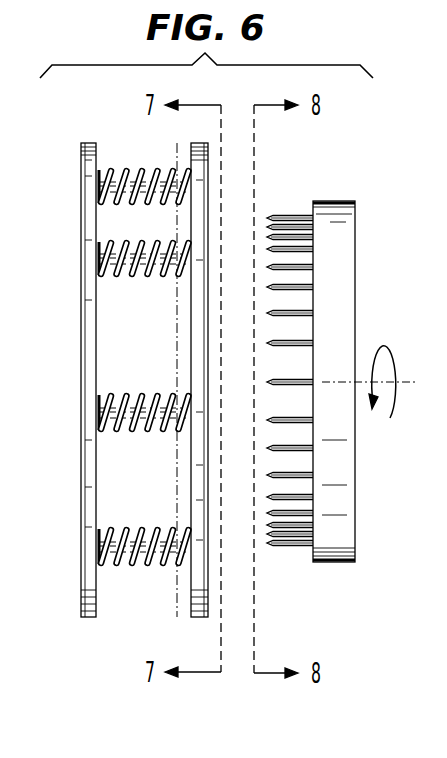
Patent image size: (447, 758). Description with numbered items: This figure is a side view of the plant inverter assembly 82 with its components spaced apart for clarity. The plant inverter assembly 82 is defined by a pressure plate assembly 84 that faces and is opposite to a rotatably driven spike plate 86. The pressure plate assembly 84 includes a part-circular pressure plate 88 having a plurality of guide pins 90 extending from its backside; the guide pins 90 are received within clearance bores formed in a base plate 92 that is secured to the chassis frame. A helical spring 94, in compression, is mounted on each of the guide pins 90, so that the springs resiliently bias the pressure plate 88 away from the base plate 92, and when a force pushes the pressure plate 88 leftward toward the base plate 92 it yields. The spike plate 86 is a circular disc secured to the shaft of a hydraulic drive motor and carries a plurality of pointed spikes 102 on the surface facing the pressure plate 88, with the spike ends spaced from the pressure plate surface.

The plant inverter assembly 82 is at (341, 374).
The pressure plate assembly 84 is at (125, 388).
The spike plate 86 is at (333, 567).
The pressure plate 88 is at (191, 153).
The guide pins 90 is at (143, 278).
The base plate 92 is at (81, 527).
The helical spring 94 is at (148, 431).
The pointed spikes 102 is at (268, 545).